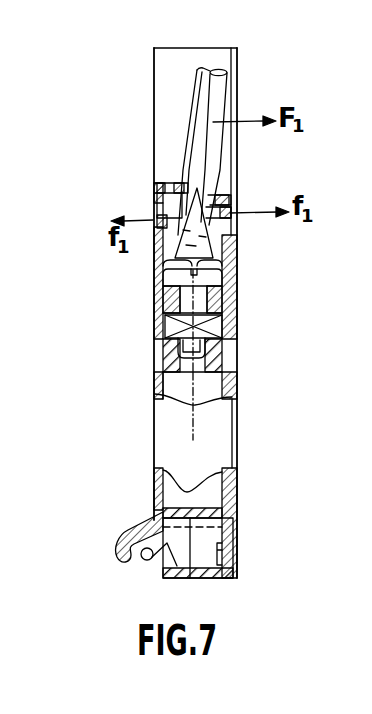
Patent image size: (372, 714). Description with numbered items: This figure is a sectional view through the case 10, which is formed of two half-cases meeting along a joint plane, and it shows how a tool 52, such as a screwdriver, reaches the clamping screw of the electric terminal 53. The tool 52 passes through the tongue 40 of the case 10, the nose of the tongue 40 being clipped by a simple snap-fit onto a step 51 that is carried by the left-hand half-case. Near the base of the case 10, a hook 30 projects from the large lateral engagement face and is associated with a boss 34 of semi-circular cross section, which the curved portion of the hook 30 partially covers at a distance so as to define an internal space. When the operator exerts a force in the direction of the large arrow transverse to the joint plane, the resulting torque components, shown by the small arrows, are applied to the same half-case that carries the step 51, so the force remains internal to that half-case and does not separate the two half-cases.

The case 10 is at (243, 359).
The hook 30 is at (127, 533).
The boss 34 is at (151, 558).
The tongue 40 is at (155, 185).
The step 51 is at (230, 198).
The tool 52 is at (213, 95).
The electric terminal 53 is at (225, 300).